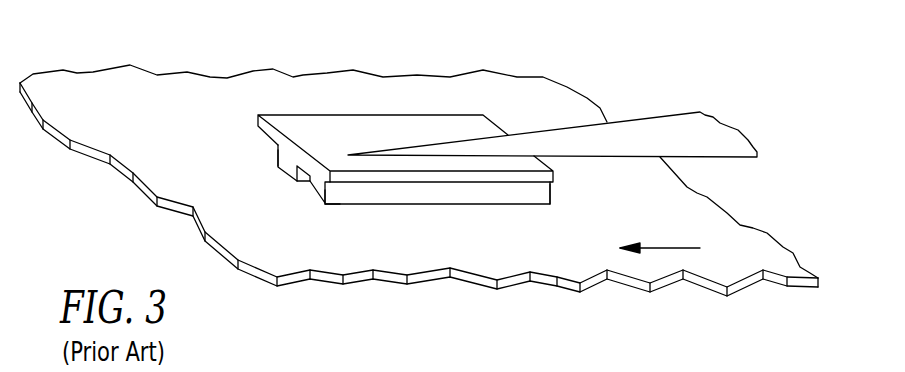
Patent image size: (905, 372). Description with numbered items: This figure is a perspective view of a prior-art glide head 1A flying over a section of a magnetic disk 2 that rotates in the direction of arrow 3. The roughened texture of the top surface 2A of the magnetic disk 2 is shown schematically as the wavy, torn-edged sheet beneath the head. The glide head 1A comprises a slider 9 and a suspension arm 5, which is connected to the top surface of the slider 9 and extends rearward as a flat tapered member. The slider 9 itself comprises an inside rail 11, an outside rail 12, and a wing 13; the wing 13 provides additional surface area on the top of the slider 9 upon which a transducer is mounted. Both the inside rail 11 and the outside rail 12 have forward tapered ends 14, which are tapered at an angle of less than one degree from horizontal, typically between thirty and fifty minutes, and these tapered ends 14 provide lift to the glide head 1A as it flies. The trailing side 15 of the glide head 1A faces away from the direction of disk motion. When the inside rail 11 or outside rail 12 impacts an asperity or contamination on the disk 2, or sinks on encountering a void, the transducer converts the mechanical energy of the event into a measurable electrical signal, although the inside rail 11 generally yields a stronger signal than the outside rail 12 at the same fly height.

The down facing glide head 1A is at (405, 141).
The magnetic disk 2 is at (753, 230).
The top surface 2A is at (355, 260).
The arrow 3 is at (662, 248).
The suspension arm 5 is at (673, 112).
The slider 9 is at (406, 196).
The inside rail 11 is at (312, 193).
The outside rail 12 is at (280, 175).
The wing 13 is at (258, 116).
The forward tapered ends 14 is at (553, 195).
The trailing side 15 is at (287, 158).